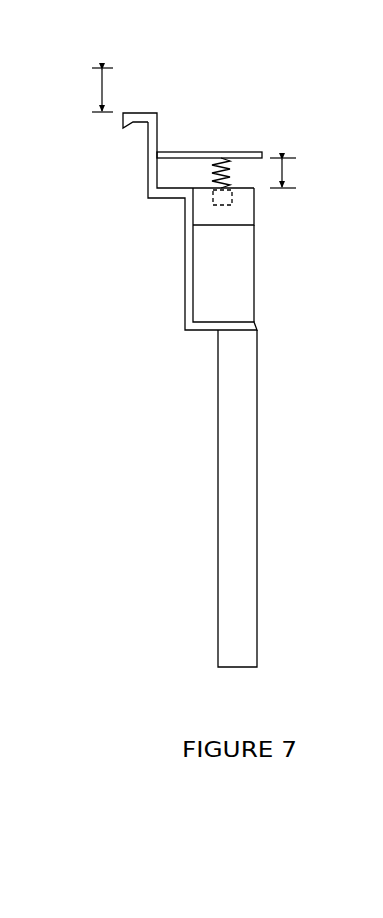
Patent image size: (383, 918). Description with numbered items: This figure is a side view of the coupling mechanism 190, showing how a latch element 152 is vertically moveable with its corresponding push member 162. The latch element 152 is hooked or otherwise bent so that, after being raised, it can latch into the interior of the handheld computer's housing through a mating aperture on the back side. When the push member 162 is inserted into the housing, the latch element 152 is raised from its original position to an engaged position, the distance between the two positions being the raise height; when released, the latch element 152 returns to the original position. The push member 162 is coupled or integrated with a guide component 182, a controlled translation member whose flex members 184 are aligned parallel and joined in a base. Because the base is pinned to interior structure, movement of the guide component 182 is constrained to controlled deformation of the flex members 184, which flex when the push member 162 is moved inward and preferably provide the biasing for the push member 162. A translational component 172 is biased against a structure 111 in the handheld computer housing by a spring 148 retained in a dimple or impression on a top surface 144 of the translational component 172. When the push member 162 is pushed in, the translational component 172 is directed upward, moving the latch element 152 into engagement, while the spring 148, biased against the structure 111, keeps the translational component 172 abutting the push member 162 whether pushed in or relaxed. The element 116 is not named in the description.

The structure 111 is at (251, 152).
The bracket 116 is at (212, 199).
The top surface 144 is at (248, 190).
The spring 148 is at (212, 164).
The latch element 152 is at (127, 112).
The push member 162 is at (227, 271).
The translational component 172 is at (240, 213).
The guide component 182 is at (278, 475).
The flex members 184 is at (243, 555).
The coupling mechanism 190 is at (187, 553).